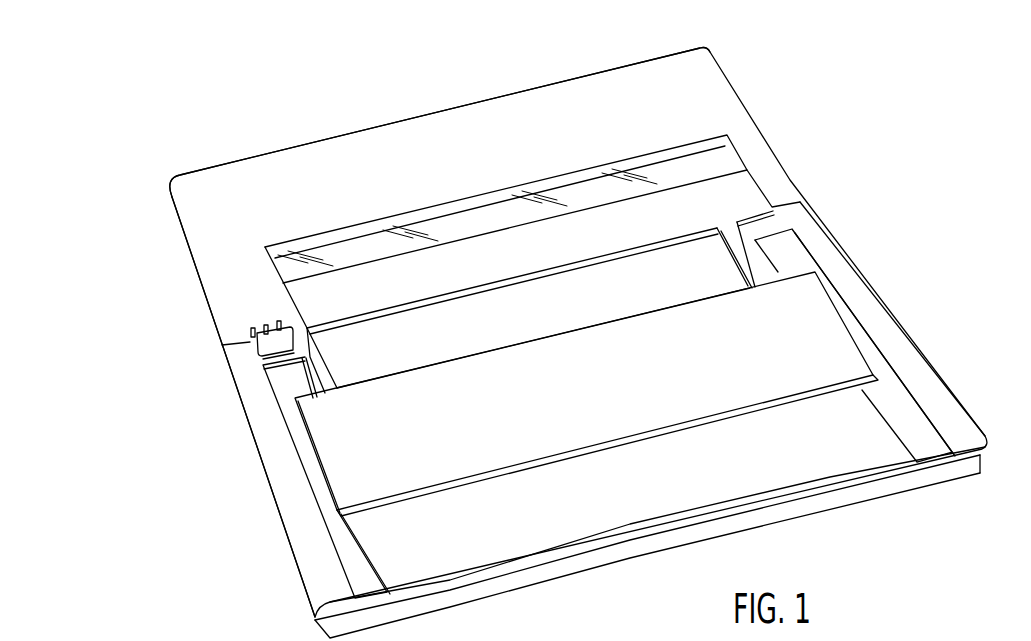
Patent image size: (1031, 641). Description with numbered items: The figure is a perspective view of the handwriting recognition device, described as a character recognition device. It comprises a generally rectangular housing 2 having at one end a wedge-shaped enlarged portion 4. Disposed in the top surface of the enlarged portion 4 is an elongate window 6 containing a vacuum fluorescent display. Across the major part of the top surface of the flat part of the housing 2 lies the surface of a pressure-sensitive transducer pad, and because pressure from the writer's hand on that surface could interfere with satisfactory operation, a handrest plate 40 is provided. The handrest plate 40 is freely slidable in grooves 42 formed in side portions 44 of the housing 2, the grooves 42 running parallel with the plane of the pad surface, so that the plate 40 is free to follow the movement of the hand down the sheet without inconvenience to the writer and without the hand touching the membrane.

The housing 2 is at (813, 238).
The wedge-shaped enlarged portion 4 is at (557, 93).
The elongate window 6 is at (728, 162).
The handrest plate 40 is at (822, 327).
The grooves 42 is at (352, 563).
The side portions 44 is at (292, 510).